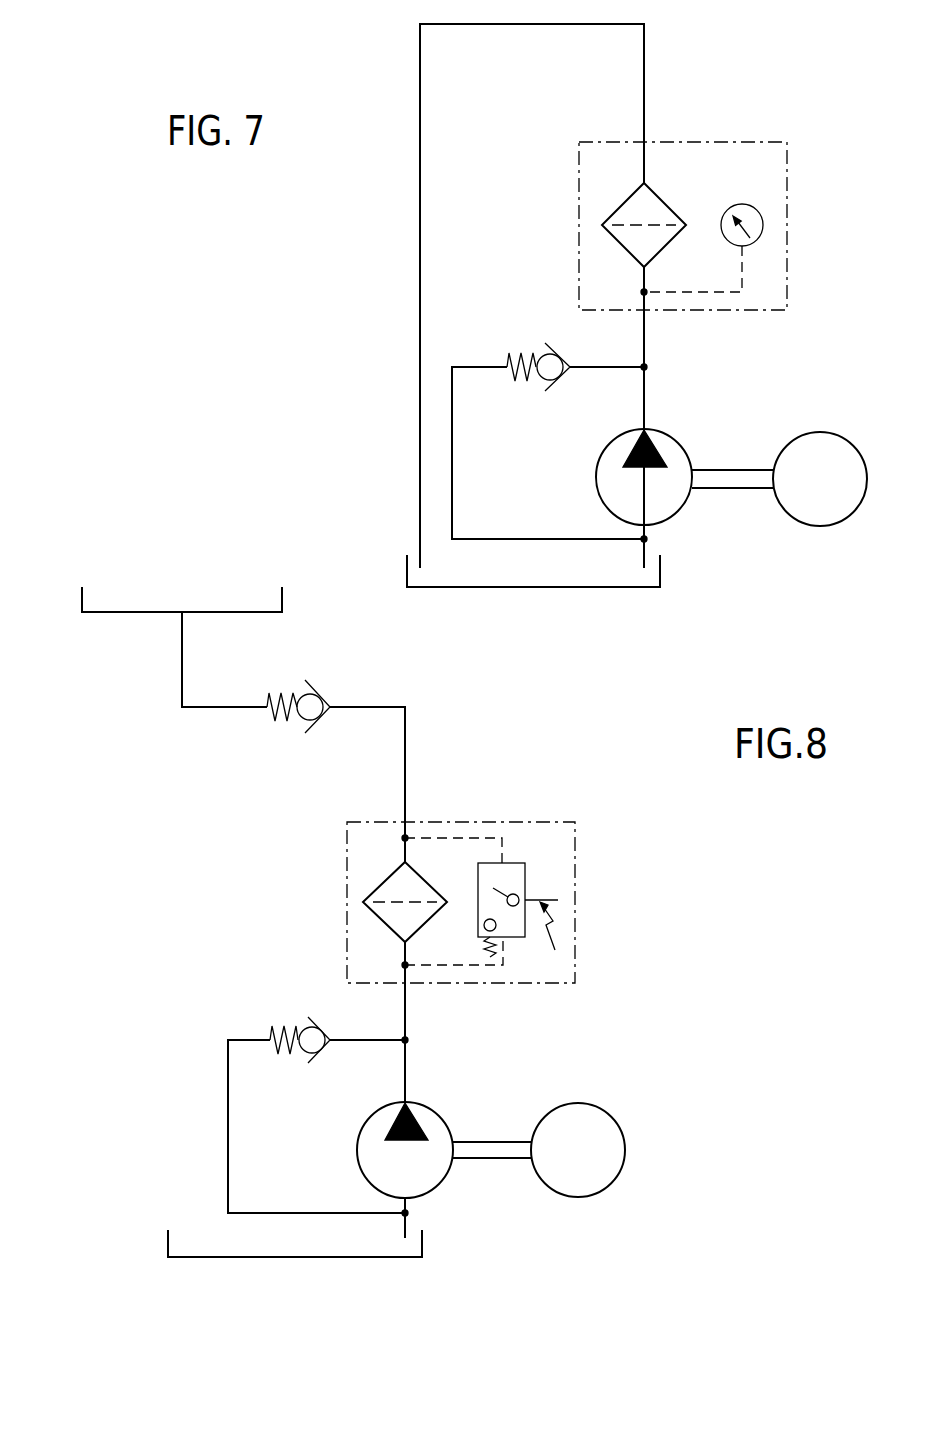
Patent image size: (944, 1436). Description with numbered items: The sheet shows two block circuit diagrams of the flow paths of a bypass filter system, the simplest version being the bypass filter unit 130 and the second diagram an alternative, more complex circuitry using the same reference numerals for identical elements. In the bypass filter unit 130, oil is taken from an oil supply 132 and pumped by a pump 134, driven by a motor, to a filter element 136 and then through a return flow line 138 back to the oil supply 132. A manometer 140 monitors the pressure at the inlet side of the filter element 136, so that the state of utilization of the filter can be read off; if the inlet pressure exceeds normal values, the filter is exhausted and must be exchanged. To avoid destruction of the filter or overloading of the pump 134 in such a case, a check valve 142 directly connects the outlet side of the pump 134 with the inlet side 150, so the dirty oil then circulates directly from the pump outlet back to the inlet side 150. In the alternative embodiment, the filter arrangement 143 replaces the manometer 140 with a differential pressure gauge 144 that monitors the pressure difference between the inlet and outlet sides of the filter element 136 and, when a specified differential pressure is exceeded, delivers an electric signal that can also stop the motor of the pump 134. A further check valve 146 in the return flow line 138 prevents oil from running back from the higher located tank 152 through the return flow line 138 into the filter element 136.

In FIG. 7, the bypass filter unit 130 is at (766, 115).
In FIG. 7, the oil supply 132 is at (455, 572).
In FIG. 8, the oil supply 132 is at (200, 1242).
In FIG. 7, the pump 134 is at (682, 442).
In FIG. 8, the pump 134 is at (437, 1122).
In FIG. 7, the filter element 136 is at (664, 207).
In FIG. 8, the filter element 136 is at (375, 882).
In FIG. 7, the return flow line 138 is at (420, 340).
In FIG. 8, the return flow line 138 is at (183, 665).
In FIG. 7, the manometer 140 is at (762, 222).
In FIG. 7, the check valve 142 is at (505, 340).
In FIG. 8, the check valve 142 is at (308, 1020).
In FIG. 8, the filter unit 143 is at (515, 773).
In FIG. 8, the differential pressure gauge 144 is at (527, 882).
In FIG. 8, the check valve 146 is at (290, 730).
In FIG. 8, the inlet side 150 is at (410, 1235).
In FIG. 8, the tank 152 is at (132, 610).